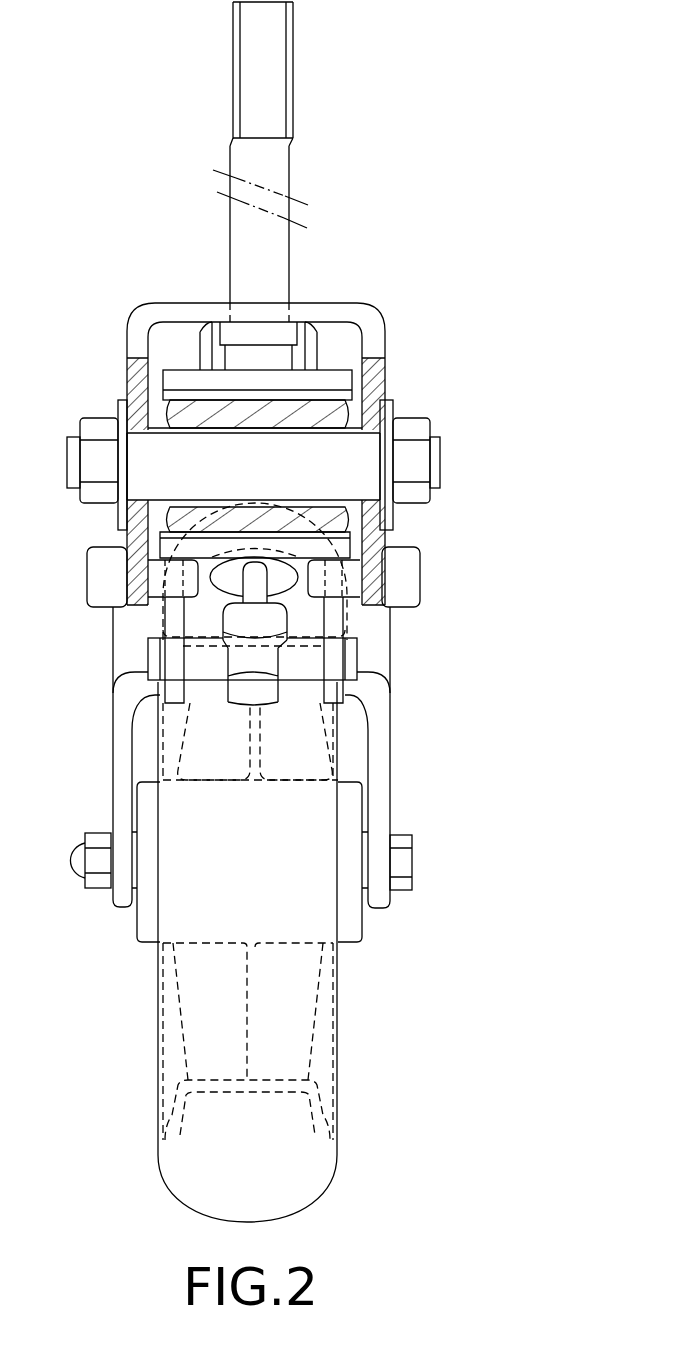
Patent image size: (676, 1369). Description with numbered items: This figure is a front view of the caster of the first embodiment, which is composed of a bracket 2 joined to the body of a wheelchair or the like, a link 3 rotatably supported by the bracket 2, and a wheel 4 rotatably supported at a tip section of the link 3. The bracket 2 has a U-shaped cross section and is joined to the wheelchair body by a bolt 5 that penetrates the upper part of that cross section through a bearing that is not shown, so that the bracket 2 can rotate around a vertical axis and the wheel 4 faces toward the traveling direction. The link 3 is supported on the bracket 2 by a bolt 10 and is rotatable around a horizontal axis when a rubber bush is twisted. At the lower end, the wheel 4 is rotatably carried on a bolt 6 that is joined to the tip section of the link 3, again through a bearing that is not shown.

The bolt 5 is at (290, 158).
The bracket 2 is at (385, 338).
The bolt 10 is at (447, 448).
The link 3 is at (390, 743).
The bolt 6 is at (413, 845).
The wheel 4 is at (337, 1160).